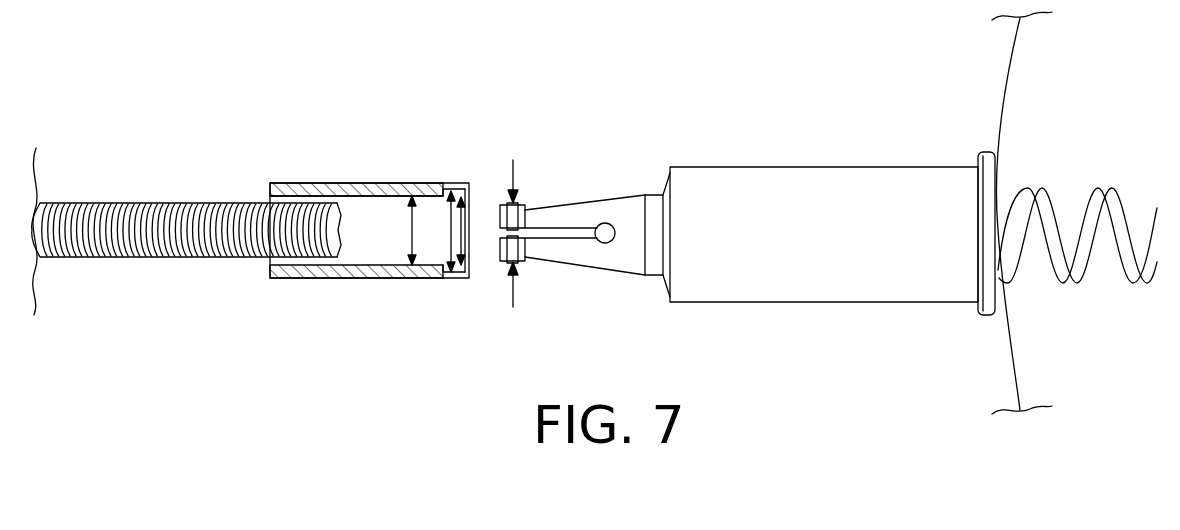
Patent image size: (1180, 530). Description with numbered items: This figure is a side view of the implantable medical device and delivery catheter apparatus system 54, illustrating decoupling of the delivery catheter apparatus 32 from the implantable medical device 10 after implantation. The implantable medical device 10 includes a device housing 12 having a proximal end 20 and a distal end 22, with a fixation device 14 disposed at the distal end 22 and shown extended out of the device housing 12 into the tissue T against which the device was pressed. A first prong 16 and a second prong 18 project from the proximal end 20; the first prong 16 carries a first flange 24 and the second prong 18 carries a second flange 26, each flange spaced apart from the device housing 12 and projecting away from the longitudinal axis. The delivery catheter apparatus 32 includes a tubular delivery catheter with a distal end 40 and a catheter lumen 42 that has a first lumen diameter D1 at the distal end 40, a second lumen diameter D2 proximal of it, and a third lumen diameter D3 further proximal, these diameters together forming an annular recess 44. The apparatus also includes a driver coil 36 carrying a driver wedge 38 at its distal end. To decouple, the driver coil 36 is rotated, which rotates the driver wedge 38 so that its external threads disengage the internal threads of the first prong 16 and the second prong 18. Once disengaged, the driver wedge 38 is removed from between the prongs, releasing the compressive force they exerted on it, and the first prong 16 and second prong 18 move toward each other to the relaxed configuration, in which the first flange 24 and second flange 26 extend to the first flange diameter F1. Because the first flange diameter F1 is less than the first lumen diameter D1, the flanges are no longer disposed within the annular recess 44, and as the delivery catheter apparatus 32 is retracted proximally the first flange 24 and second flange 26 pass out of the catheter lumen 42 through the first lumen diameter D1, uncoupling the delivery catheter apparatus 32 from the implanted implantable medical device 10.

The implantable medical device 10 is at (912, 164).
The device housing 12 is at (757, 164).
The fixation device 14 is at (1103, 190).
The first prong 16 is at (602, 196).
The second prong 18 is at (588, 276).
The proximal end 20 is at (648, 193).
The distal end 22 is at (988, 152).
The first flange 24 is at (523, 207).
The second flange 26 is at (523, 258).
The delivery catheter apparatus 32 is at (385, 217).
The driver coil 36 is at (188, 206).
The driver wedge 38 is at (300, 260).
The distal end 40 is at (468, 186).
The catheter lumen 42 is at (382, 198).
The annular recess 44 is at (446, 190).
The implantable medical device and delivery catheter apparatus system 54 is at (667, 83).
The first lumen diameter D1 is at (470, 240).
The second lumen diameter D2 is at (448, 236).
The third lumen diameter D3 is at (400, 232).
The first flange diameter F1 is at (512, 175).
The tissue T is at (1010, 62).